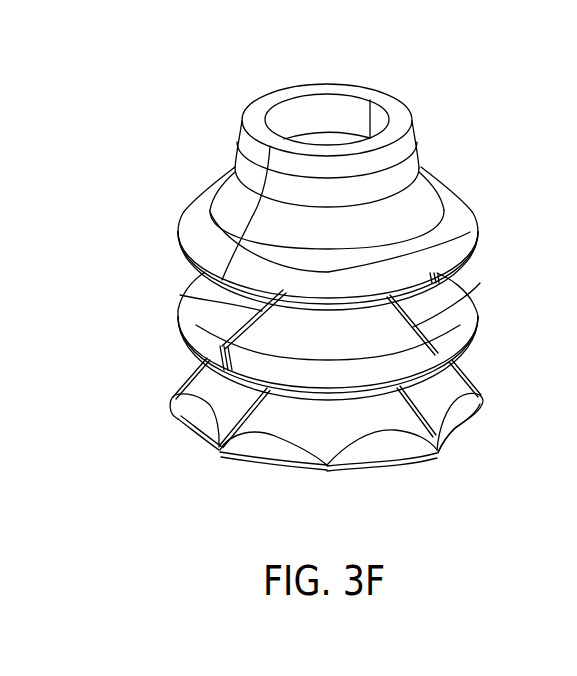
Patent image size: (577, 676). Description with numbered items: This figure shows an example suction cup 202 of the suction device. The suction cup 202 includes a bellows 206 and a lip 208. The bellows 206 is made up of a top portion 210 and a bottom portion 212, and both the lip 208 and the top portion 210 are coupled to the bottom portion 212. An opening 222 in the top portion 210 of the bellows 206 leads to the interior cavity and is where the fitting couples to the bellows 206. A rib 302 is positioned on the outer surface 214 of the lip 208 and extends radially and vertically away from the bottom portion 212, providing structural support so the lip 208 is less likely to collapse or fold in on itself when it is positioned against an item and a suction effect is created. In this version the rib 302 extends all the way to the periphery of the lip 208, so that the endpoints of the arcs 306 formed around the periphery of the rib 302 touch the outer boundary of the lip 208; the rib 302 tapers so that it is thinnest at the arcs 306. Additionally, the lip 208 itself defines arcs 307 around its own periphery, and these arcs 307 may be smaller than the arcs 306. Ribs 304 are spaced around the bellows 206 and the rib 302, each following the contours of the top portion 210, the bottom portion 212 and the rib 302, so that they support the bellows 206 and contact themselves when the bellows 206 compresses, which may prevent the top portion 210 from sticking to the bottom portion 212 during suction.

The suction cup 202 is at (342, 42).
The opening 222 is at (343, 113).
The bellows 206 is at (472, 208).
The top portion 210 is at (180, 227).
The bottom portion 212 is at (178, 322).
The ribs 304 is at (183, 296).
The rib 302 is at (448, 373).
The lip 208 is at (483, 396).
The outer surface 214 is at (172, 407).
The arcs 306 is at (176, 424).
The arcs 307 is at (192, 431).